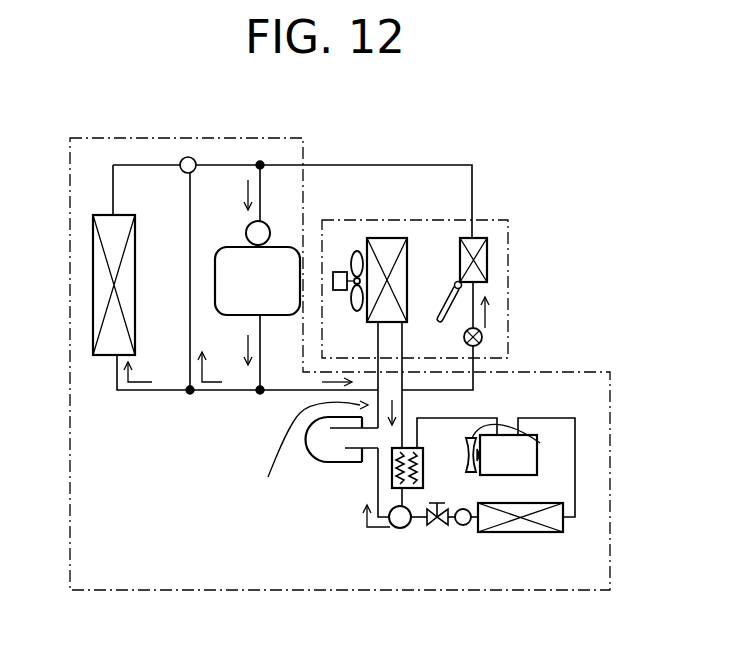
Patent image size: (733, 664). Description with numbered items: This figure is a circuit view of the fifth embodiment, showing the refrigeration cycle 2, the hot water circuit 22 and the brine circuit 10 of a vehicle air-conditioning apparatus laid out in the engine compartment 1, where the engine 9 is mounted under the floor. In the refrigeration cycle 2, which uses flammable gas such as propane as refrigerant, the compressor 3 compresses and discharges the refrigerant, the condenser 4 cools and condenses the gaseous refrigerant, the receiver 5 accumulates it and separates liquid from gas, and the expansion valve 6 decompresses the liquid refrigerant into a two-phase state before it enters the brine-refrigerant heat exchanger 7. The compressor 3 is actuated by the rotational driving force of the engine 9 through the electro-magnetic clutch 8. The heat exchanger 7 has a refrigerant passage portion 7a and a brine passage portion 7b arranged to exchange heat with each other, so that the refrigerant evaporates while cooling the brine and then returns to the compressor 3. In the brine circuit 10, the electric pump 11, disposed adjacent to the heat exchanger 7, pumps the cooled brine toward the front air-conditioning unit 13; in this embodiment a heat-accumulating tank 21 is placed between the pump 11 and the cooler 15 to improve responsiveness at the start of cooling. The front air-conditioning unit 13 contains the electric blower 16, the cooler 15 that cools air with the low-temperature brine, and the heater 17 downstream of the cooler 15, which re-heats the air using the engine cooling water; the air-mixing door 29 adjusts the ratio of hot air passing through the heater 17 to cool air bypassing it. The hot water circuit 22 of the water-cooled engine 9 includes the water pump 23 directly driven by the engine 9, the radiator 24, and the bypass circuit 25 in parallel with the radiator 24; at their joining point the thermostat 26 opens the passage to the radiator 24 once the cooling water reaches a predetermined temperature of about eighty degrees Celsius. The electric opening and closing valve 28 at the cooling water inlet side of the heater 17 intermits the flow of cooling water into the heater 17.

The engine compartment 1 is at (62, 228).
The refrigeration cycle 2 is at (583, 481).
The compressor 3 is at (528, 462).
The condenser 4 is at (527, 532).
The receiver 5 is at (463, 527).
The expansion valve 6 is at (437, 527).
The brine-refrigerant heat exchanger 7 is at (497, 476).
The refrigerant passage portion 7a is at (423, 478).
The brine passage portion 7b is at (392, 465).
The electro-magnetic clutch 8 is at (540, 443).
The engine 9 is at (277, 247).
The brine circuit 10 is at (318, 430).
The electric pump 11 is at (400, 528).
The front air-conditioning unit 13 is at (355, 220).
The cooler 15 is at (387, 238).
The blower 16 is at (352, 252).
The heater 17 is at (477, 240).
The heat-accumulating tank 21 is at (307, 455).
The hot water circuit 22 is at (203, 160).
The water pump 23 is at (248, 227).
The radiator 24 is at (97, 305).
The bypass circuit 25 is at (190, 310).
The thermostat 26 is at (188, 157).
The opening and closing valve 28 is at (485, 337).
The air-mixing door 29 is at (448, 282).